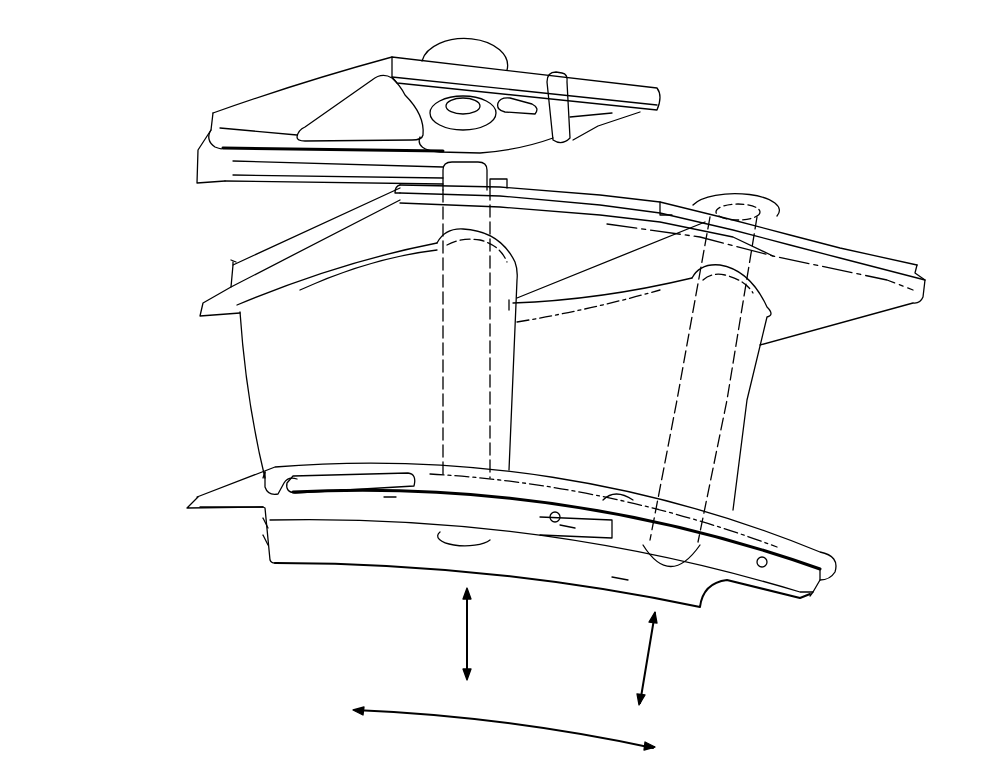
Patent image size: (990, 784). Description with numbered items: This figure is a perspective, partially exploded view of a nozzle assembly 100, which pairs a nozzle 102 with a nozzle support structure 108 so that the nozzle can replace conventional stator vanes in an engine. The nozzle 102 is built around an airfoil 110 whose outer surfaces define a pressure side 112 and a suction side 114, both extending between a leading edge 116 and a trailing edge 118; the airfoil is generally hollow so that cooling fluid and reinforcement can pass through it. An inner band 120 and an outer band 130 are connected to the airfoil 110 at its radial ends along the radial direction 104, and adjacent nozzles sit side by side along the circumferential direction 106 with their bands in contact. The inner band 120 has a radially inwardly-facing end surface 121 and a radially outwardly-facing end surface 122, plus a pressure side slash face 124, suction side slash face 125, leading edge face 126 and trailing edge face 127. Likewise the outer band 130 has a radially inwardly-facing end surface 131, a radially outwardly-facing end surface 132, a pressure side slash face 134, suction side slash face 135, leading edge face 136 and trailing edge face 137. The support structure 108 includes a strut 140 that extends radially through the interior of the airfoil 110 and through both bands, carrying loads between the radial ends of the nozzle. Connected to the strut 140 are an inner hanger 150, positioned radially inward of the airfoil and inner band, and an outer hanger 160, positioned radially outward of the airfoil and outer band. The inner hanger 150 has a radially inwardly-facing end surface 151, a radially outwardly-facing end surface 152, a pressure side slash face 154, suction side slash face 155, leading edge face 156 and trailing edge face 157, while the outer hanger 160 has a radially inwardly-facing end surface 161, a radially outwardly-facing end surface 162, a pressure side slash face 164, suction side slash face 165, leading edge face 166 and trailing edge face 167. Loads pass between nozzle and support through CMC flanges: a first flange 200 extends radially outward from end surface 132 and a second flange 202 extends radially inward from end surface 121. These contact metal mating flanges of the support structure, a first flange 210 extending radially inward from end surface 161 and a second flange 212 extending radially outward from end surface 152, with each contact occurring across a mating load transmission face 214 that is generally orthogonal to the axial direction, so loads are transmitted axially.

The nozzle assembly 100 is at (832, 187).
The nozzle 102 is at (147, 407).
The radial direction 104 is at (467, 636).
The circumferential direction 106 is at (478, 720).
The nozzle support structure 108 is at (153, 188).
The airfoil 110 is at (230, 360).
The pressure side 112 is at (277, 390).
The suction side 114 is at (513, 408).
The leading edge 116 is at (513, 307).
The trailing edge 118 is at (243, 378).
The inner band 120 is at (187, 508).
The radially inwardly-facing end surface 121 is at (347, 487).
The radially outwardly-facing end surface 122 is at (407, 463).
The pressure side slash face 124 is at (240, 490).
The suction side slash face 125 is at (640, 500).
The leading edge face 126 is at (530, 490).
The trailing edge face 127 is at (222, 512).
The outer band 130 is at (625, 190).
The radially inwardly-facing end surface 131 is at (347, 258).
The radially outwardly-facing end surface 132 is at (310, 245).
The pressure side slash face 134 is at (277, 273).
The suction side slash face 135 is at (632, 252).
The leading edge face 136 is at (567, 213).
The trailing edge face 137 is at (200, 315).
The strut 140 is at (480, 173).
The inner hanger 150 is at (512, 585).
The radially inwardly-facing end surface 151 is at (370, 490).
The radially outwardly-facing end surface 152 is at (390, 497).
The pressure side slash face 154 is at (263, 540).
The suction side slash face 155 is at (620, 577).
The leading edge face 156 is at (567, 527).
The trailing edge face 157 is at (263, 523).
The outer hanger 160 is at (593, 48).
The radially inwardly-facing end surface 161 is at (333, 100).
The radially outwardly-facing end surface 162 is at (353, 63).
The pressure side slash face 164 is at (290, 112).
The suction side slash face 165 is at (663, 97).
The leading edge face 166 is at (515, 75).
The trailing edge face 167 is at (185, 165).
The first flange 200 is at (230, 258).
The second flange 202 is at (293, 477).
The first flange 210 is at (258, 170).
The second flange 212 is at (267, 466).
The mating load transmission face 214 is at (270, 166).